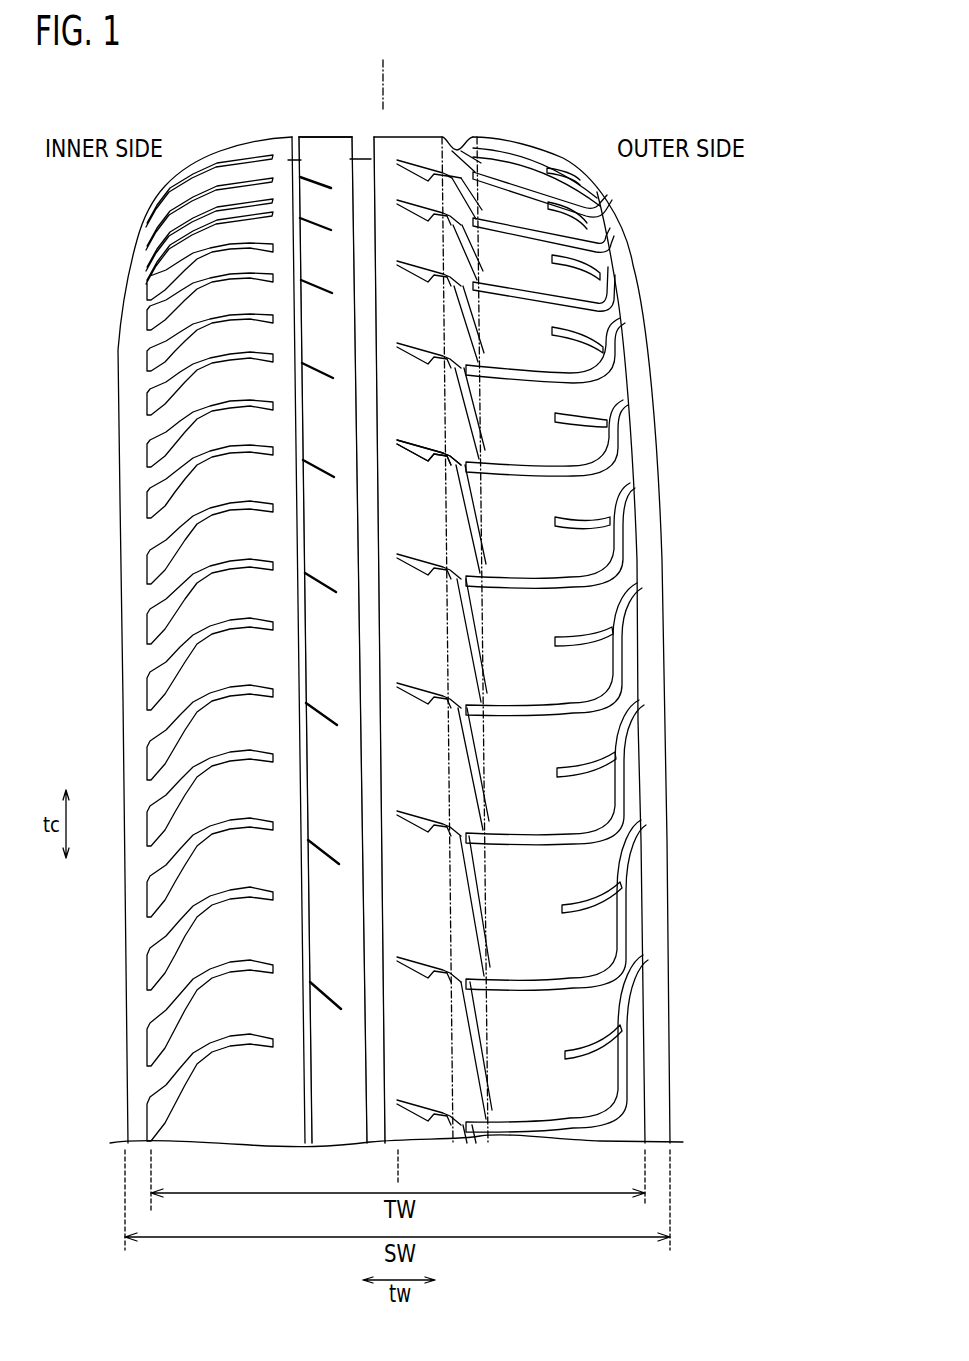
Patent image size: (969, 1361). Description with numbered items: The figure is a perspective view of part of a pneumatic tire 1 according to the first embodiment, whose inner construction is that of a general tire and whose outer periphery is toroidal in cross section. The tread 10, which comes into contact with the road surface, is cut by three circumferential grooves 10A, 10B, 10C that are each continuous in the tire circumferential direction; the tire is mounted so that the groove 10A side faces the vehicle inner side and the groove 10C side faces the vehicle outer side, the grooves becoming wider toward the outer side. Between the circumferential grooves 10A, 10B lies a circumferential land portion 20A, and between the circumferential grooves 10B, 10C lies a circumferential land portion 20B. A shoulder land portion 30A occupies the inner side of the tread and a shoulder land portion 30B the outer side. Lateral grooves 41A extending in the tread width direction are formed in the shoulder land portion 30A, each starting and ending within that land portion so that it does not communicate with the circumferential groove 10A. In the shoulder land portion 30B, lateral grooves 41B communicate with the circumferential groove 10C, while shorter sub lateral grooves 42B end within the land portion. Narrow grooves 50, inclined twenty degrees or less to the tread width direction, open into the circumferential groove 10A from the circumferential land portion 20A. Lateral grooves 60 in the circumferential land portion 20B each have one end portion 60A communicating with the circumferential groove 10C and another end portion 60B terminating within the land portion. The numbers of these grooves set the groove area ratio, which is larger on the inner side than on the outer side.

The pneumatic tire 1 is at (527, 89).
The tread 10 is at (403, 628).
The circumferential groove 10A is at (286, 125).
The circumferential groove 10B is at (355, 127).
The circumferential groove 10C is at (457, 122).
The circumferential land portion 20A is at (312, 123).
The circumferential land portion 20B is at (406, 121).
The shoulder land portion 30A is at (206, 134).
The shoulder land portion 30B is at (550, 131).
The lateral grooves 41A is at (178, 520).
The lateral grooves 41B is at (545, 385).
The sub lateral grooves 42B is at (583, 330).
The narrow grooves 50 is at (314, 370).
The lateral grooves 60 is at (418, 440).
The end portion 60A is at (435, 468).
The end portion 60B is at (394, 461).